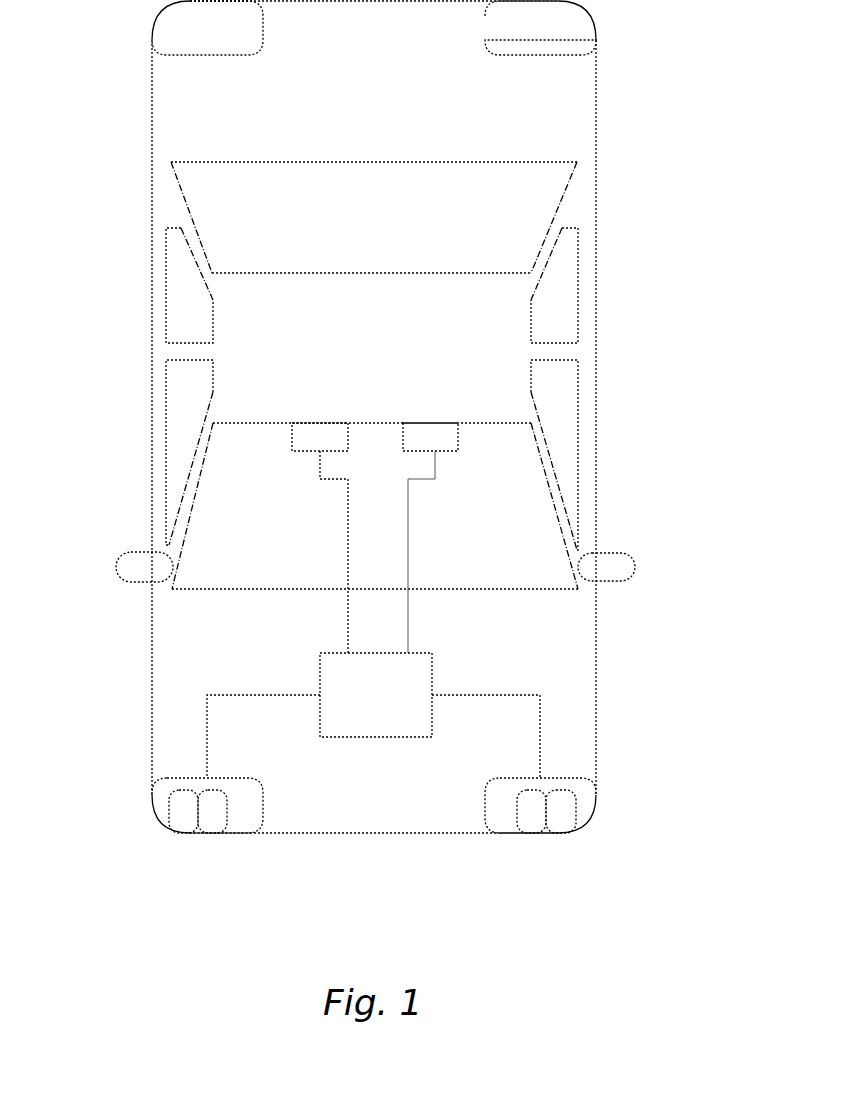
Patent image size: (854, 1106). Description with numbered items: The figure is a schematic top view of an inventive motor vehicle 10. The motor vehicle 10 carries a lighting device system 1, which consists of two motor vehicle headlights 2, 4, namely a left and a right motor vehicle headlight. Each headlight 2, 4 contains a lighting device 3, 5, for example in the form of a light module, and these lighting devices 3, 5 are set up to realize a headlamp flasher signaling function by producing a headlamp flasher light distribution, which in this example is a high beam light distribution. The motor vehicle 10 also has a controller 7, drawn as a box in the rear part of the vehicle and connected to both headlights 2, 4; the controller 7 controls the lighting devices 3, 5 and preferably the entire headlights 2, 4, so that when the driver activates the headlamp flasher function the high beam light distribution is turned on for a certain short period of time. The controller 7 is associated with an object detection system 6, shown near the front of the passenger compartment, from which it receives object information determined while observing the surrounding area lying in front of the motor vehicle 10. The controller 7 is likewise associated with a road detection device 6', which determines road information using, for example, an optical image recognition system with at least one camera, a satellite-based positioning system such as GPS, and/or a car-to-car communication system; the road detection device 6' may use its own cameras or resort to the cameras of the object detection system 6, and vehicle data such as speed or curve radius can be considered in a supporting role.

The lighting device system 1 is at (531, 847).
The motor vehicle headlight 2 is at (182, 777).
The lighting device 3 is at (170, 810).
The motor vehicle headlight 4 is at (573, 777).
The lighting device 5 is at (577, 803).
The object detection system 6 is at (305, 492).
The road detection device 6' is at (445, 492).
The controller 7 is at (373, 715).
The motor vehicle 10 is at (683, 637).